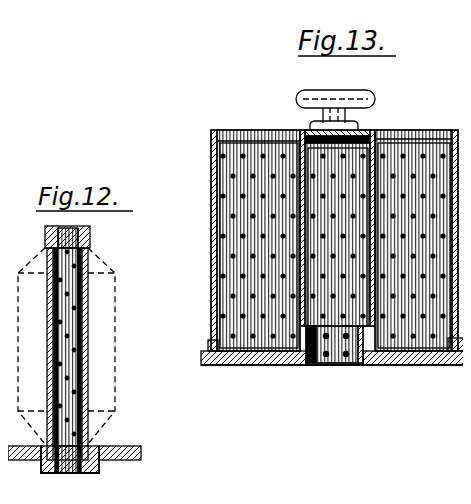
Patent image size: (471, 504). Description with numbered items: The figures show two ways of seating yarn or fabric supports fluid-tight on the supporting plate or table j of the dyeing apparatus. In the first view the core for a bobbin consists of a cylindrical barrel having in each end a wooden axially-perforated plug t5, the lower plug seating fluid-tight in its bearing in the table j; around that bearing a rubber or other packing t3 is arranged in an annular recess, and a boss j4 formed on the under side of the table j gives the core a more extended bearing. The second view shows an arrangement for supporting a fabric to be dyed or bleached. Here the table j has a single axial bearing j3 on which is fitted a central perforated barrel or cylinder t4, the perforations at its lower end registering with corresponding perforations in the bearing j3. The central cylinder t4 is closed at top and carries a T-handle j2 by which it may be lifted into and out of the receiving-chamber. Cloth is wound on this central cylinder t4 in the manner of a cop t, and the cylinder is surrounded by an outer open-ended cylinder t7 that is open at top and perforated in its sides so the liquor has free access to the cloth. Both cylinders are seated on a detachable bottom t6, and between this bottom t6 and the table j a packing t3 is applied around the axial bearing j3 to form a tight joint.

In FIG. 12, the wooden axially-perforated plug t5 is at (68, 220).
In FIG. 12, the central perforated barrel or cylinder t4 is at (40, 331).
In FIG. 12, the table j is at (105, 445).
In FIG. 13, the table j is at (271, 344).
In FIG. 12, the flange of base plate j4 is at (74, 468).
In FIG. 12, the packing t3 is at (48, 457).
In FIG. 13, the packing t3 is at (378, 340).
In FIG. 13, the T-handle j2 is at (368, 94).
In FIG. 13, the outer open-ended cylinder t7 is at (455, 240).
In FIG. 13, the cop t is at (336, 212).
In FIG. 13, the axial bearing j3 is at (332, 334).
In FIG. 13, the detachable bottom t6 is at (425, 340).